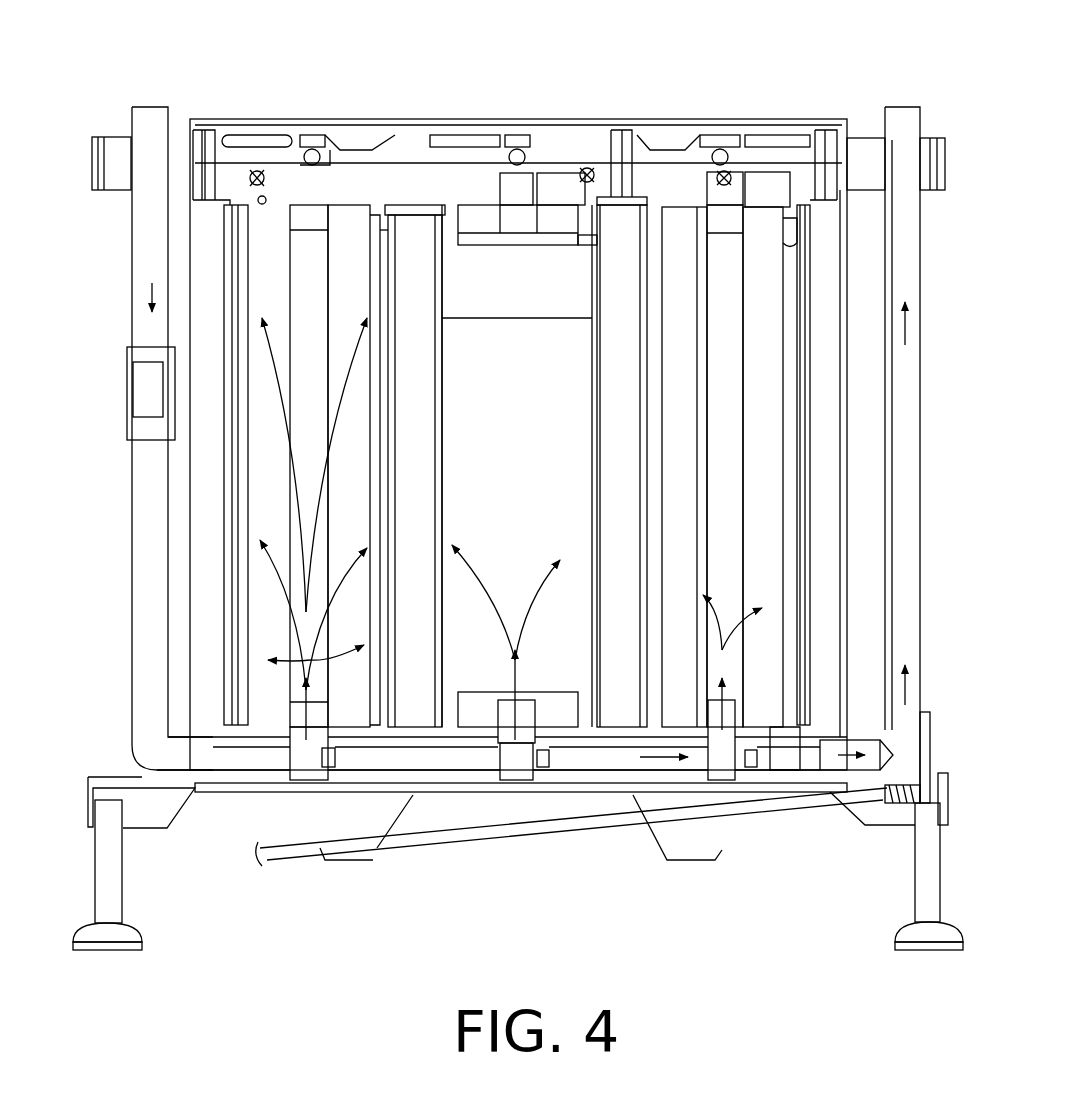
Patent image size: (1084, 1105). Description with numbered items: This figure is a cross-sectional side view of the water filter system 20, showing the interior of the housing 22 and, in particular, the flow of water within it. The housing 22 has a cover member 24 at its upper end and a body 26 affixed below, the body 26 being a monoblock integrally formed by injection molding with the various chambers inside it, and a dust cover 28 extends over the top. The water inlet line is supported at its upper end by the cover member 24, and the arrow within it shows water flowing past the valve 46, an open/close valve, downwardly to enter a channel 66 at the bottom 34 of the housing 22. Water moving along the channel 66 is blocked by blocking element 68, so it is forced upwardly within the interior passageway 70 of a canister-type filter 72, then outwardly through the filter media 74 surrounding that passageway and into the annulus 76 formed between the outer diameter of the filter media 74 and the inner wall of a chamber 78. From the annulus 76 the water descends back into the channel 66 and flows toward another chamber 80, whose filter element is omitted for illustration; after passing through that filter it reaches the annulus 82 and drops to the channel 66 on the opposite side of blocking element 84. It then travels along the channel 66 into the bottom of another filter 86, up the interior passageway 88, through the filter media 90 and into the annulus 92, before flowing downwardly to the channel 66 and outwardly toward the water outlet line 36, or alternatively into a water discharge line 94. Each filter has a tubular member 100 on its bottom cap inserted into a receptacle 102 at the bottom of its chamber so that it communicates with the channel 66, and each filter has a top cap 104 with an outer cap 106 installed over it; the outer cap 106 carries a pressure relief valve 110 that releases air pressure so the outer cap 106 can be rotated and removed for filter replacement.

The water filter system 20 is at (735, 68).
The housing 22 is at (152, 233).
The cover member 24 is at (103, 152).
The body 26 is at (840, 412).
The dust cover 28 is at (606, 128).
The bottom 34 is at (450, 794).
The water outlet line 36 is at (903, 512).
The valve 46 is at (128, 395).
The channel 66 is at (262, 772).
The blocking element 68 is at (330, 770).
The interior passageway 70 is at (294, 492).
The filter 72 is at (363, 220).
The filter media 74 is at (343, 466).
The annulus 76 is at (376, 381).
The chamber 78 is at (377, 487).
The chamber 80 is at (521, 472).
The annulus 82 is at (592, 400).
The blocking element 84 is at (533, 772).
The filter 86 is at (763, 222).
The interior passageway 88 is at (732, 467).
The filter media 90 is at (697, 427).
The annulus 92 is at (788, 428).
The water discharge line 94 is at (497, 845).
The tubular member 100 is at (730, 715).
The receptacle 102 is at (722, 782).
The top cap 104 is at (285, 198).
The outer cap 106 is at (328, 160).
The pressure relief valve 110 is at (265, 172).